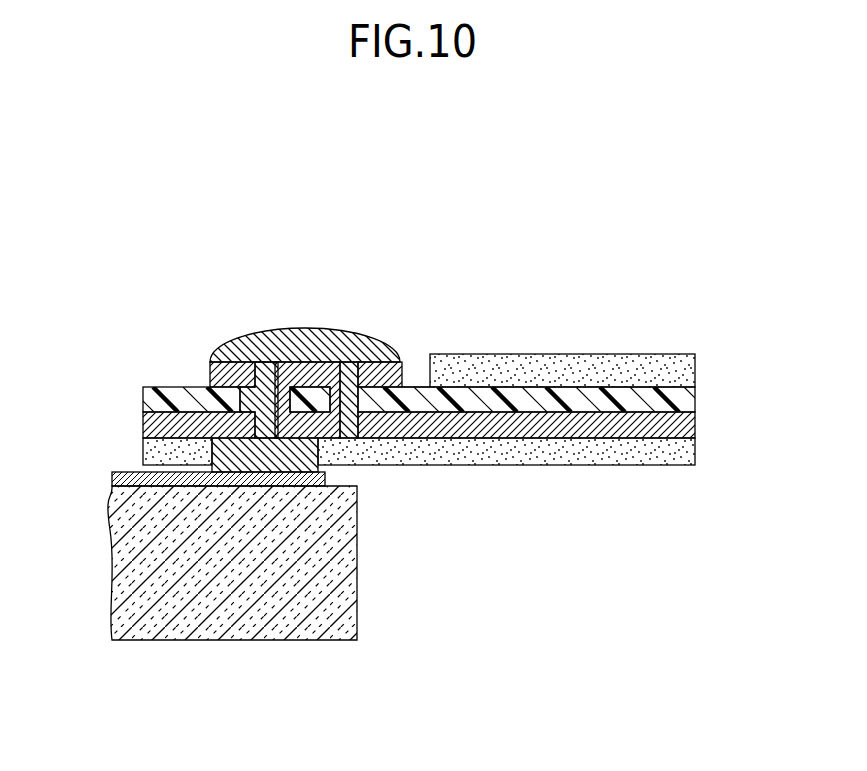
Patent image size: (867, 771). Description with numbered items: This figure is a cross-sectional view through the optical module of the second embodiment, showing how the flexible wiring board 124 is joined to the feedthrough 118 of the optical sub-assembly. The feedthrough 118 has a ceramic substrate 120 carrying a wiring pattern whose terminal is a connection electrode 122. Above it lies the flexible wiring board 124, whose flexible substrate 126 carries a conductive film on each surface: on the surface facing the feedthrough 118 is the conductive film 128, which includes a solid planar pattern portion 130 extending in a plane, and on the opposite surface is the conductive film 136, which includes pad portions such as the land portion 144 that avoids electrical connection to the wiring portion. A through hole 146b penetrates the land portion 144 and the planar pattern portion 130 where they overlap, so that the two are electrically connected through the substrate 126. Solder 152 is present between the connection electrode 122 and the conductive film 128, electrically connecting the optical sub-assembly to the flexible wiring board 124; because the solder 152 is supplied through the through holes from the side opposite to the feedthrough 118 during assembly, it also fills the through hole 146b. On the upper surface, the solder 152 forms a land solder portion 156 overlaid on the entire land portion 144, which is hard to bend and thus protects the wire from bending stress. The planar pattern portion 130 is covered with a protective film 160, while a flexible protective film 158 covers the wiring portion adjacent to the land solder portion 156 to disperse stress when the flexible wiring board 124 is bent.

The feedthrough 118 is at (235, 608).
The ceramic substrate 120 is at (343, 573).
The connection electrode 122 is at (114, 479).
The flexible wiring board 124 is at (485, 368).
The substrate 126 is at (692, 407).
The conductive film 128 is at (485, 443).
The planar pattern portion 130 is at (610, 413).
The conductive film 136 is at (412, 358).
The land portion 144 is at (323, 373).
The through hole 146b is at (253, 387).
The solder 152 is at (318, 448).
The land solder portion 156 is at (307, 347).
The protective film 158 is at (682, 371).
The protective film 160 is at (690, 449).